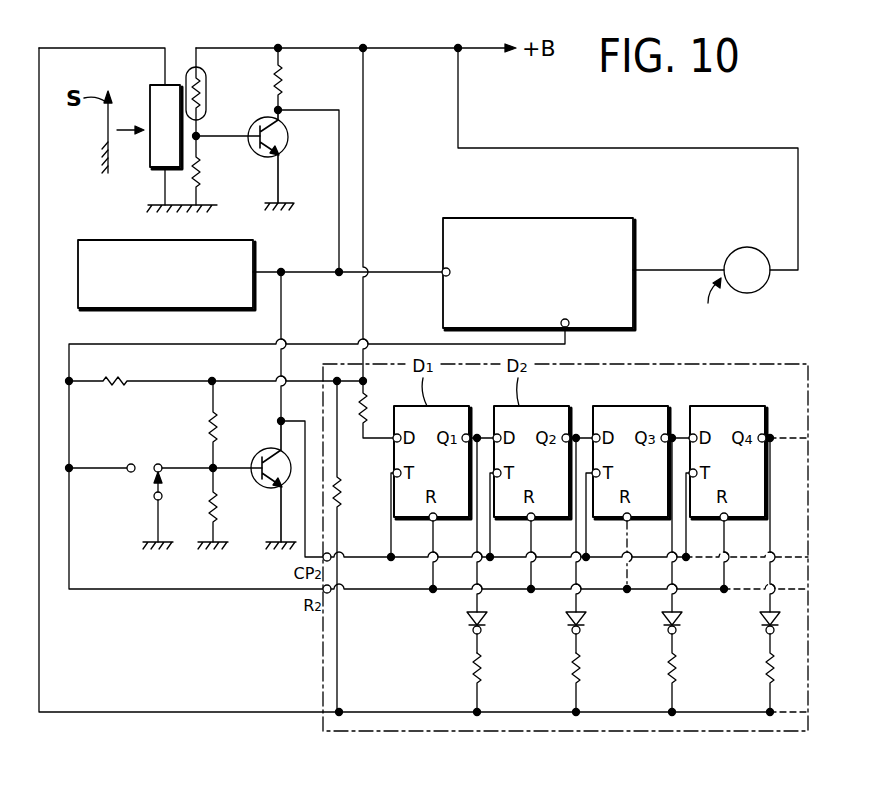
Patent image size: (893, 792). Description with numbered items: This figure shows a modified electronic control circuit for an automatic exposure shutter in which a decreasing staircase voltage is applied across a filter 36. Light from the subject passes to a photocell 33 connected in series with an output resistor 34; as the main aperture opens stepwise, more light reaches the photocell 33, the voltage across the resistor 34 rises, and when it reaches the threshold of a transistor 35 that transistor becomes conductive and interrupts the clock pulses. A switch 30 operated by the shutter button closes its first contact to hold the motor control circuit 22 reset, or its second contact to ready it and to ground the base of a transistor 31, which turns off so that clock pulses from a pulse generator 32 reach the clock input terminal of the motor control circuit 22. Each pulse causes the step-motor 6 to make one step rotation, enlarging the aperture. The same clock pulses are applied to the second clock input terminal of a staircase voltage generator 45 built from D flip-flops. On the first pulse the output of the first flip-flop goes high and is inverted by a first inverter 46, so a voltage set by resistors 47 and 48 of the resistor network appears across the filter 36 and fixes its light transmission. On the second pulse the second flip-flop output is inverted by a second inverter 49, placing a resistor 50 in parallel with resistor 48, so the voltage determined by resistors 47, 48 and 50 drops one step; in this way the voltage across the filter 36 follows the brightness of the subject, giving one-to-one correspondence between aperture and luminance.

The step-motor 6 is at (746, 247).
The motor control circuit 22 is at (635, 238).
The switch 30 is at (143, 478).
The transistor 31 is at (270, 447).
The pulse generator 32 is at (257, 258).
The photocell 33 is at (206, 78).
The output resistor 34 is at (203, 187).
The transistor 35 is at (262, 156).
The filter 36 is at (155, 170).
The staircase voltage generator 45 is at (649, 364).
The first inverter 46 is at (467, 627).
The resistor 47 is at (347, 488).
The resistor 48 is at (482, 674).
The second inverter 49 is at (566, 627).
The resistor 50 is at (580, 668).